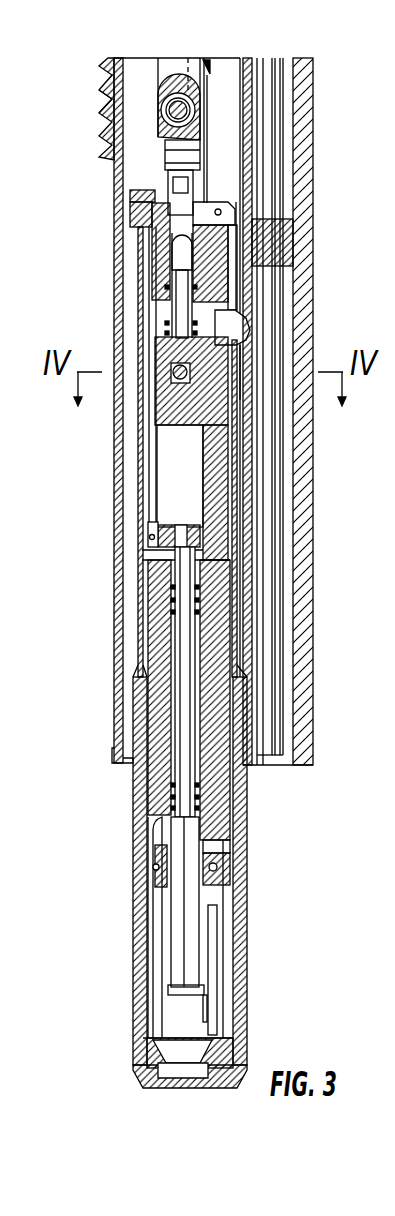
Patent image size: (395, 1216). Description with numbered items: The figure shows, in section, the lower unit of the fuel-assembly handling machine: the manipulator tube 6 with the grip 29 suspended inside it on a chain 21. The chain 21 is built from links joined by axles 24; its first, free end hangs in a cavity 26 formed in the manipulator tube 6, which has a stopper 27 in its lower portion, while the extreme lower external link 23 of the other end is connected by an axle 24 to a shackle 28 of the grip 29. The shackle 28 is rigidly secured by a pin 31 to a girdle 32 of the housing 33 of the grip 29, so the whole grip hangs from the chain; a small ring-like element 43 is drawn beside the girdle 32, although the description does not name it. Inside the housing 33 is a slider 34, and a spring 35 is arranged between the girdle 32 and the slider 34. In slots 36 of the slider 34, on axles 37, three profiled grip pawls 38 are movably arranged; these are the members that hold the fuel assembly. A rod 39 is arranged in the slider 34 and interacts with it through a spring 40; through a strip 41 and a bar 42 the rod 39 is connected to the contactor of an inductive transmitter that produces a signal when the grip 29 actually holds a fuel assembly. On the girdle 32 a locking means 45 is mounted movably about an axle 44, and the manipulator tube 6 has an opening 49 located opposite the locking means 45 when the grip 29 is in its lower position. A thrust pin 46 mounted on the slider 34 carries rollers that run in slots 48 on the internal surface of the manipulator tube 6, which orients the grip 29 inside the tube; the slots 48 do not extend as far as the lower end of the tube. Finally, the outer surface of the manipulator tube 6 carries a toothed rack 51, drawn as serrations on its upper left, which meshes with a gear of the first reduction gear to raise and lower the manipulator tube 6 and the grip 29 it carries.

The manipulator tube 6 is at (112, 650).
The rack 51 is at (113, 72).
The shackle 28 is at (113, 108).
The chain 21 is at (212, 62).
The external link 23 is at (168, 72).
The axle 24 is at (188, 112).
The pin 31 is at (170, 152).
The retainer ring 43 is at (130, 195).
The girdle 32 is at (158, 216).
The axle 44 is at (220, 200).
The spring 35 is at (170, 316).
The locking means 45 is at (238, 326).
The opening 49 is at (245, 352).
The slot 48 is at (188, 371).
The bar 42 is at (150, 460).
The thrust pin 46 is at (184, 386).
The strip 41 is at (180, 484).
The spring 40 is at (172, 594).
The slider 34 is at (162, 738).
The grip 29 is at (128, 790).
The housing 33 is at (133, 940).
The rod 39 is at (180, 902).
The grip pawl 38 is at (218, 944).
The slot 36 is at (216, 848).
The axle 37 is at (222, 870).
The cavity 26 is at (263, 70).
The stopper 27 is at (282, 240).